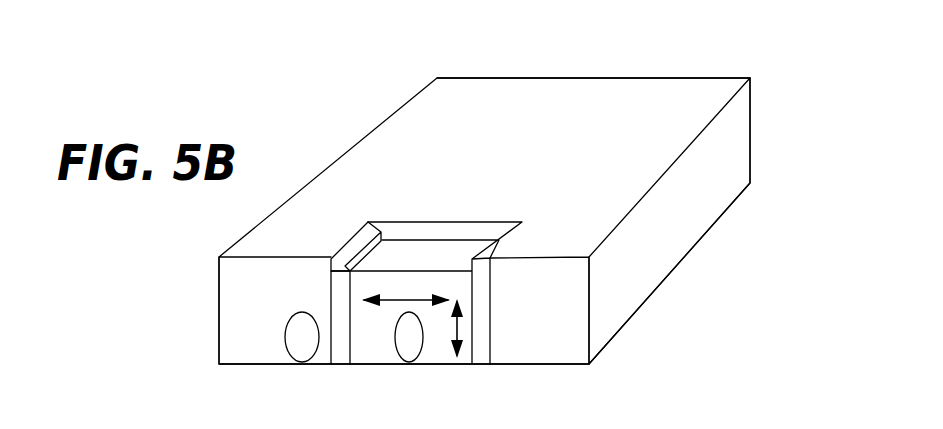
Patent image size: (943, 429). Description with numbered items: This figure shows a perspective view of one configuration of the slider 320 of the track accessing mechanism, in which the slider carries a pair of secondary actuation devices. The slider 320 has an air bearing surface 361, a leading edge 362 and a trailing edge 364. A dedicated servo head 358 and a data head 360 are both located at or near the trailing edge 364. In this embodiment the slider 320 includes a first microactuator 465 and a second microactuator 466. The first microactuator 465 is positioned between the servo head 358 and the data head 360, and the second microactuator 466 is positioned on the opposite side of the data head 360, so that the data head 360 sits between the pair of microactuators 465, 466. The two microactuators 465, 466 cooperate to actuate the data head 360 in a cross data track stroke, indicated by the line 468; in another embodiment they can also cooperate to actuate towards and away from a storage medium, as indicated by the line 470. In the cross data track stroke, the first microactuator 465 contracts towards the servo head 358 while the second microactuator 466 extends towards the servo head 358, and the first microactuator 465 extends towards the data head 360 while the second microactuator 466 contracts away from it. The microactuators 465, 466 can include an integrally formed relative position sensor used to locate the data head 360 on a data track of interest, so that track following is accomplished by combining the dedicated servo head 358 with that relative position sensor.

The slider 320 is at (329, 100).
The leading edge 362 is at (608, 78).
The air bearing surface 361 is at (668, 278).
The trailing edge 364 is at (555, 335).
The servo head 358 is at (303, 343).
The data head 360 is at (407, 353).
The first microactuator 465 is at (380, 232).
The second microactuator 466 is at (500, 238).
The cross data track stroke line 468 is at (397, 298).
The line towards and away from storage medium 470 is at (458, 322).